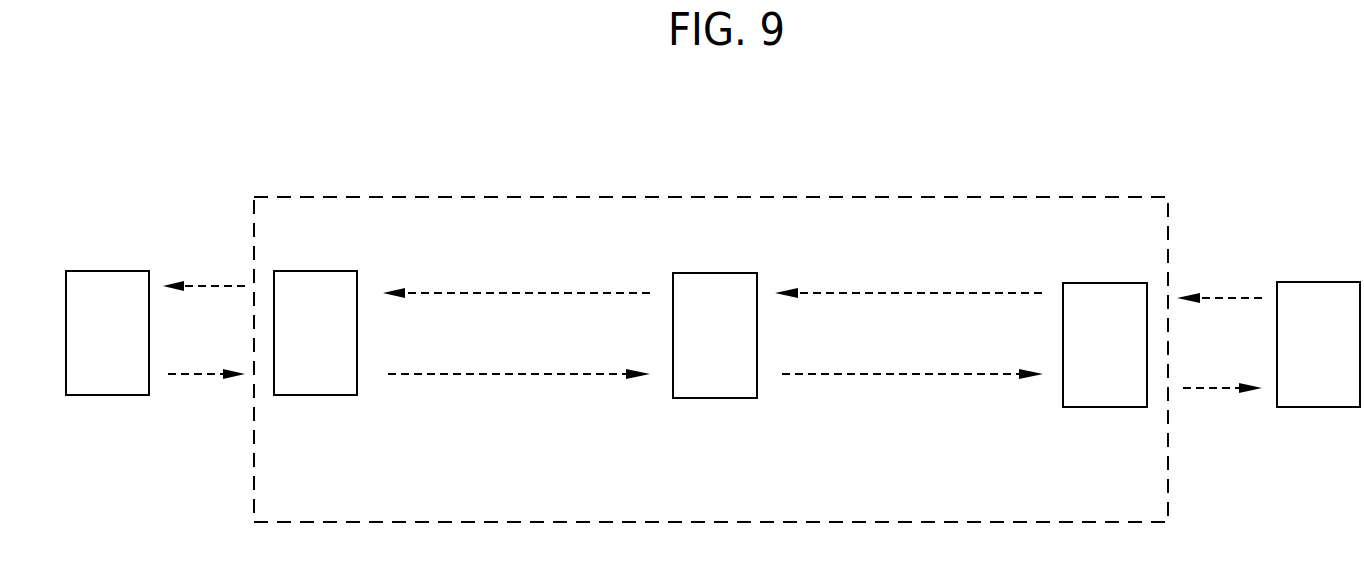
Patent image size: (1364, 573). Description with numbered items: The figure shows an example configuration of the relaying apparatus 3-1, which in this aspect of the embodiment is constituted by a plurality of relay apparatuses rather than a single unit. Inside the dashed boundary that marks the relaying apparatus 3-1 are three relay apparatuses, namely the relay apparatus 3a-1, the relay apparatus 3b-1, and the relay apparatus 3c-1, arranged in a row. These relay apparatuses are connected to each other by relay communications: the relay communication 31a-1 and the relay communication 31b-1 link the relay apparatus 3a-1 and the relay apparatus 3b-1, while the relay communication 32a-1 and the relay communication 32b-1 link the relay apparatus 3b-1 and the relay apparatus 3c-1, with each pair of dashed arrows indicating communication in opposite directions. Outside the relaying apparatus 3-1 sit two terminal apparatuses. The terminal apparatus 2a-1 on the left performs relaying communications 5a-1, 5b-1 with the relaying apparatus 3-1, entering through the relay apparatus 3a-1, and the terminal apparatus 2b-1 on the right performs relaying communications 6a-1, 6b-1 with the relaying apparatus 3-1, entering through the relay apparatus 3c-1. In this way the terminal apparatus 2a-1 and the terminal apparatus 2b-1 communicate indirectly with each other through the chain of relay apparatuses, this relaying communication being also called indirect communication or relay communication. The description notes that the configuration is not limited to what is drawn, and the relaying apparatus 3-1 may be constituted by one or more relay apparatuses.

The relaying apparatus 3-1 is at (711, 359).
The terminal apparatus 2a-1 is at (90, 395).
The terminal apparatus 2b-1 is at (1302, 407).
The relay apparatus 3a-1 is at (298, 395).
The relay apparatus 3b-1 is at (697, 398).
The relay apparatus 3c-1 is at (1088, 407).
The relaying communication 5a-1 is at (192, 288).
The relaying communication 5b-1 is at (192, 376).
The relay communication 31a-1 is at (528, 295).
The relay communication 31b-1 is at (526, 376).
The relay communication 32a-1 is at (922, 295).
The relay communication 32b-1 is at (918, 376).
The relaying communication 6a-1 is at (1222, 300).
The relaying communication 6b-1 is at (1222, 390).